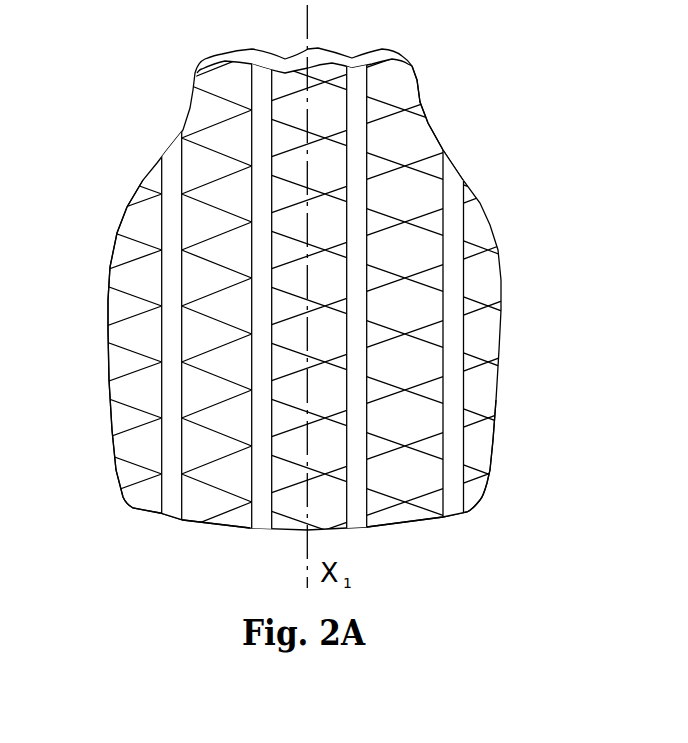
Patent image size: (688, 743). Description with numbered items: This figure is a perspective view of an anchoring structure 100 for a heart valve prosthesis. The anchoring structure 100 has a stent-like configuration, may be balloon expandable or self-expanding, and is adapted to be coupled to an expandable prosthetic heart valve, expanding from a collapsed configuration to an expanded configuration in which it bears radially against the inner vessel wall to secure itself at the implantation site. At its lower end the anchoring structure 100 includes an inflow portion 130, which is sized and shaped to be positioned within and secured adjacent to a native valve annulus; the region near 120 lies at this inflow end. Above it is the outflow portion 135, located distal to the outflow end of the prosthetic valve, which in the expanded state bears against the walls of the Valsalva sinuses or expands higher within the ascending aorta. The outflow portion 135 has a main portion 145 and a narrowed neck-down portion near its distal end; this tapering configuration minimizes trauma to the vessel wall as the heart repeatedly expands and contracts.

The anchoring structure 100 is at (128, 68).
The first end portion 120 is at (130, 490).
The inflow portion 130 is at (485, 485).
The outflow portion 135 is at (426, 126).
The main portion 145 is at (110, 308).